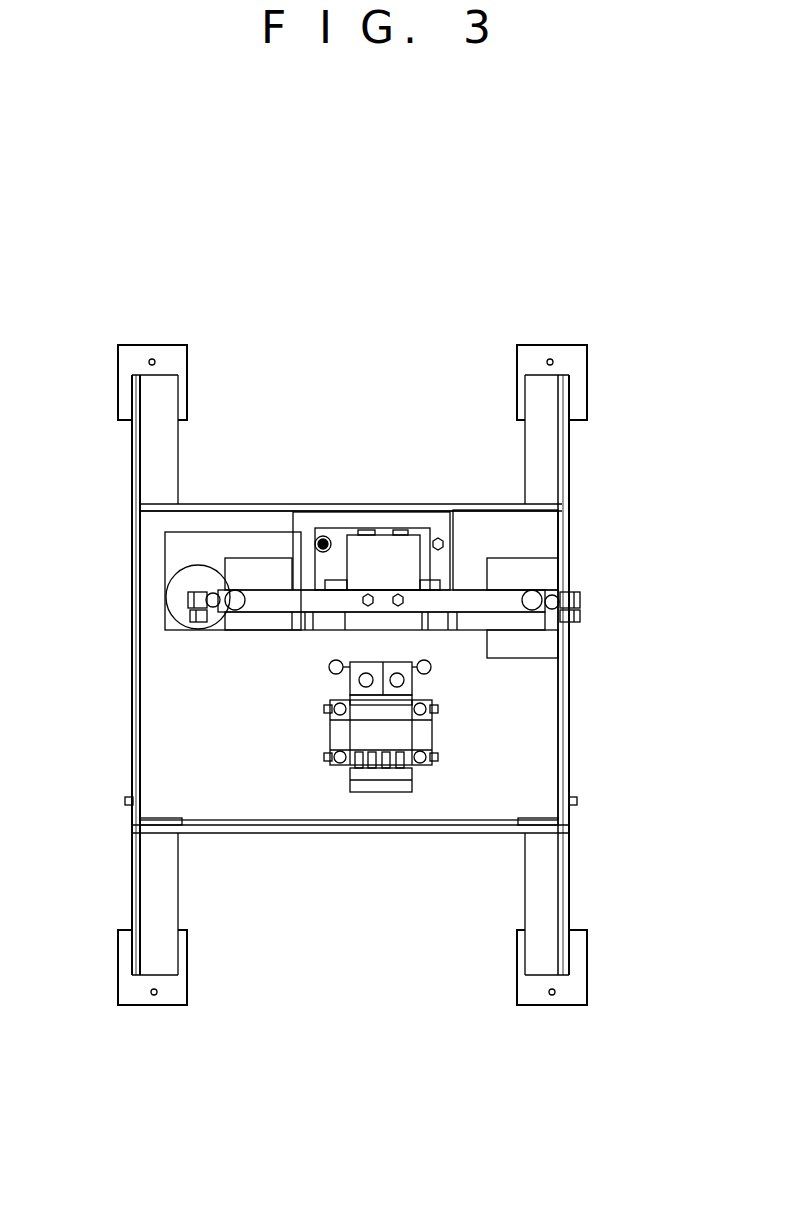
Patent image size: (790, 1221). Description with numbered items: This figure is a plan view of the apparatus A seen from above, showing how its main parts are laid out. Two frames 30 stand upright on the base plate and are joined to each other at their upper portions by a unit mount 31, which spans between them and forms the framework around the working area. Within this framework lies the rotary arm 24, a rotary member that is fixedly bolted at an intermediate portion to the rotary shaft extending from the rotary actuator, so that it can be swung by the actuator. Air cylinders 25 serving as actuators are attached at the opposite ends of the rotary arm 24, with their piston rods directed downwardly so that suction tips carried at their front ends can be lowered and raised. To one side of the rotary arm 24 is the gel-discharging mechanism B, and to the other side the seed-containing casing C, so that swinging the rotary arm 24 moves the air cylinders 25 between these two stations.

The apparatus A is at (476, 234).
The gel-discharging mechanism B is at (247, 558).
The seed-containing casing C is at (540, 655).
The rotary arm 24 is at (282, 600).
The air cylinders 25 is at (235, 595).
The frames 30 is at (133, 458).
The unit mount 31 is at (178, 692).